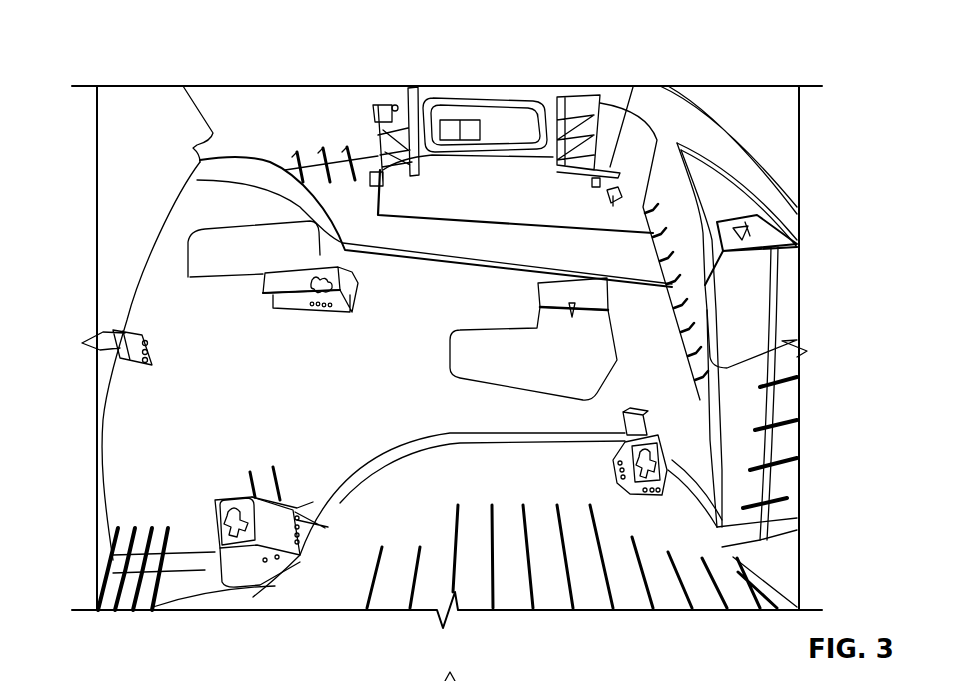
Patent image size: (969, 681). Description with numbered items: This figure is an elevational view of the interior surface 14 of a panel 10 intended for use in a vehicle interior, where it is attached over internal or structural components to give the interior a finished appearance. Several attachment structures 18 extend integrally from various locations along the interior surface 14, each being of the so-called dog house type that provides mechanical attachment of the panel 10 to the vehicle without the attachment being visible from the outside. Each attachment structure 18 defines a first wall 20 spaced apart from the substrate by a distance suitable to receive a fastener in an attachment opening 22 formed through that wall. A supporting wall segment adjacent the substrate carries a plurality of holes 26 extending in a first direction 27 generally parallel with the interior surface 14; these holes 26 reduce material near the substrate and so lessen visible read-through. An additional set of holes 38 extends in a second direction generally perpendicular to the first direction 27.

The panel 10 is at (102, 163).
The interior surface 14 is at (138, 443).
The attachment structure 18 is at (388, 90).
The first wall 20 is at (603, 73).
The attachment opening 22 is at (395, 126).
The holes 26 is at (442, 98).
The first direction 27 is at (564, 96).
The additional set of holes 38 is at (318, 304).